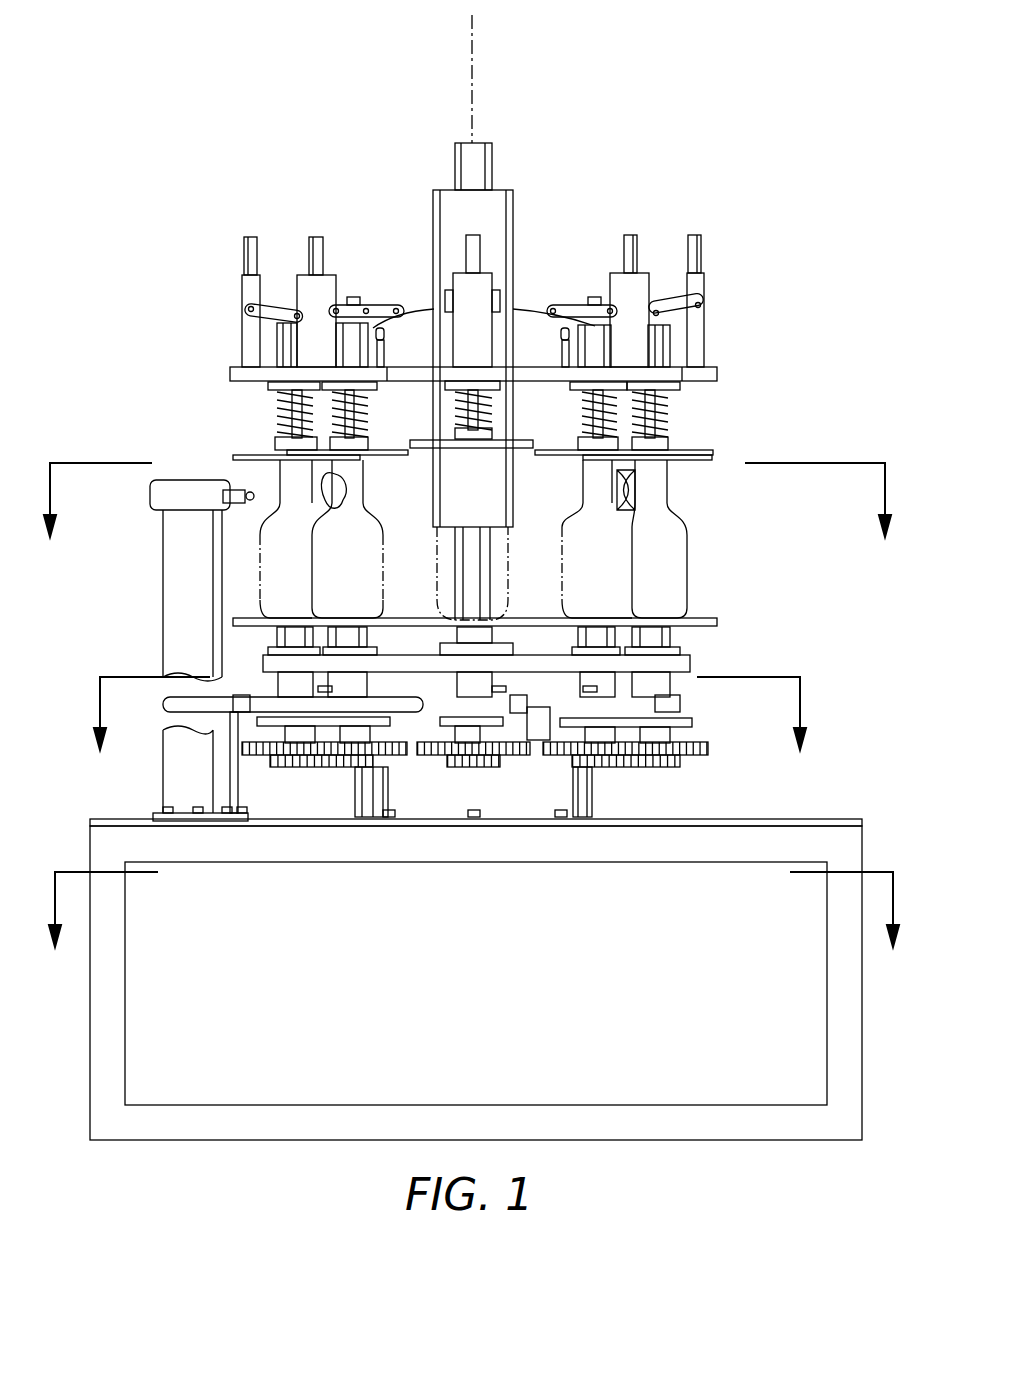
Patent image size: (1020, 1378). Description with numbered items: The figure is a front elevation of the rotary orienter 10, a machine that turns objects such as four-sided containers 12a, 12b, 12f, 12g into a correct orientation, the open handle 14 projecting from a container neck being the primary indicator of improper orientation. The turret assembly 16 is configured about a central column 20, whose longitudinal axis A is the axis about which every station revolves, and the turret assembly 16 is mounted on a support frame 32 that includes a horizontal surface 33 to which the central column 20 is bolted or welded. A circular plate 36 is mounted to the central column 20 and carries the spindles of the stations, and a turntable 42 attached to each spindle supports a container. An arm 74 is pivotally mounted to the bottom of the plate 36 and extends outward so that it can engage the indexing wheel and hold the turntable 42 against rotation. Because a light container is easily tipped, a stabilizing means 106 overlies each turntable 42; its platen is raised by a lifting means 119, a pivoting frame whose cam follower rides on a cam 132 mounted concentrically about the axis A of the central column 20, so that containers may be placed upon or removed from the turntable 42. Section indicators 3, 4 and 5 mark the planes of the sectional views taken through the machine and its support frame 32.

The rotary orienter 10 is at (686, 188).
The longitudinal axis of the central column A is at (470, 91).
The central column 20 is at (455, 172).
The cam 132 is at (420, 312).
The lifting means 119 is at (234, 267).
The stabilizing means 106 is at (709, 291).
The turret assembly 16 is at (722, 370).
The open handle 14 is at (640, 492).
The container 12a is at (340, 533).
The container 12b is at (277, 587).
The container 12f is at (674, 528).
The container 12g is at (632, 553).
The turntable 42 is at (603, 618).
The plate 36 is at (688, 664).
The arm 74 is at (650, 707).
The horizontal surface 33 is at (810, 820).
The support frame 32 is at (862, 848).
The section line 3- 3 is at (467, 522).
The section line 4- 4 is at (452, 736).
The section line 5- 5 is at (475, 931).